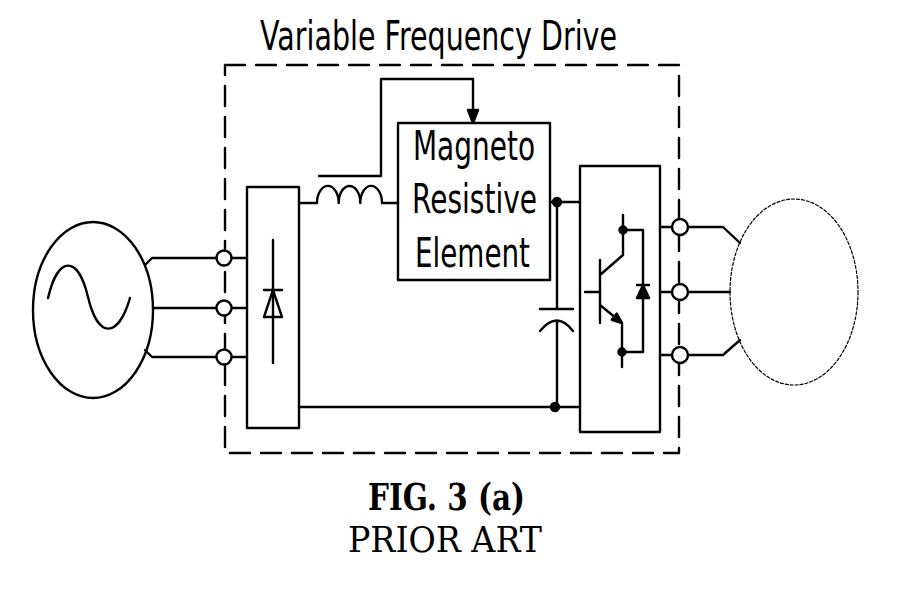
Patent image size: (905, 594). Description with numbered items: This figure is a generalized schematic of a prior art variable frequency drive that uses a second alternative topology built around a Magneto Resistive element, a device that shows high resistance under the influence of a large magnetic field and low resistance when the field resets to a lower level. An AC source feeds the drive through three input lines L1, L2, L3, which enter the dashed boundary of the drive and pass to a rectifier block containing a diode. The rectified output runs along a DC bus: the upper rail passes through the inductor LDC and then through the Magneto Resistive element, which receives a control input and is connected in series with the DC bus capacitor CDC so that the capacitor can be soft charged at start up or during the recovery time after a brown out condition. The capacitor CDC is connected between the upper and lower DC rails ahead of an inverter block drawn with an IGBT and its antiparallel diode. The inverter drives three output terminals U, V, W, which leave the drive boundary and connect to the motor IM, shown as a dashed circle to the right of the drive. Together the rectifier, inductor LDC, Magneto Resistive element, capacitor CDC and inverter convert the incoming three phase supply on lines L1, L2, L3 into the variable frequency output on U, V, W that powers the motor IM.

The first AC input phase line L1 is at (196, 237).
The second AC input phase line L2 is at (200, 288).
The third AC input phase line L3 is at (196, 337).
The DC link inductor LDC is at (348, 225).
The DC bus capacitor CDC is at (533, 306).
The inverter output phase U is at (700, 209).
The inverter output phase V is at (695, 271).
The inverter output phase W is at (700, 334).
The induction motor IM is at (794, 292).